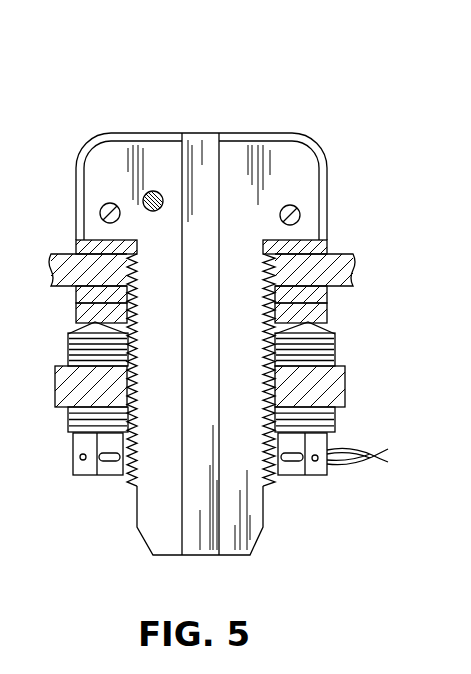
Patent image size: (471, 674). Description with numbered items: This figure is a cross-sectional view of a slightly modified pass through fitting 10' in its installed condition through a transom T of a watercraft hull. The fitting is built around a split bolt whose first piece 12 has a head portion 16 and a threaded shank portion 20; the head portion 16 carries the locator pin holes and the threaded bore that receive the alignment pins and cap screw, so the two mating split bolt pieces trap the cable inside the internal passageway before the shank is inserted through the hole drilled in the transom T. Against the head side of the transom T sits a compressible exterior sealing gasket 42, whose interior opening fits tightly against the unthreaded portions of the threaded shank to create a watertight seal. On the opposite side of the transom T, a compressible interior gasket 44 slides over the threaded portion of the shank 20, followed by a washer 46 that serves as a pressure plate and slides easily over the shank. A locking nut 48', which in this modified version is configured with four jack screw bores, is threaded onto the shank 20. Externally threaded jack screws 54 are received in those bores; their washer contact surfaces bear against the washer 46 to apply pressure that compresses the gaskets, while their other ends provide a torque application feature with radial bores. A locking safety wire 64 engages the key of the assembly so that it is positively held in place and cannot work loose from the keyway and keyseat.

The pass through fitting 10' is at (206, 288).
The first piece 12 is at (261, 126).
The head portion 16 is at (255, 223).
The threaded shank portion 20 is at (137, 478).
The exterior sealing gasket 42 is at (76, 250).
The interior gasket 44 is at (76, 293).
The washer 46 is at (76, 316).
The jack screws 54 is at (68, 418).
The locking nut 48' is at (233, 386).
The safety wire 64 is at (357, 465).
The transom T is at (343, 254).